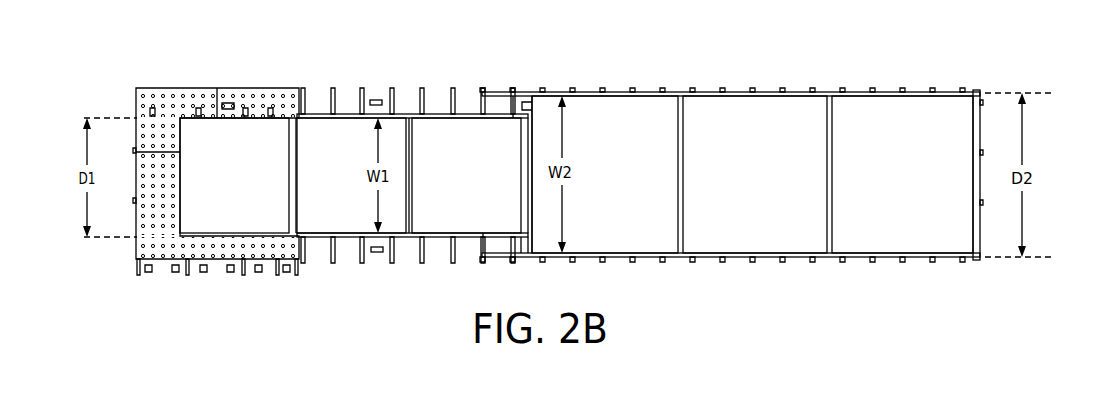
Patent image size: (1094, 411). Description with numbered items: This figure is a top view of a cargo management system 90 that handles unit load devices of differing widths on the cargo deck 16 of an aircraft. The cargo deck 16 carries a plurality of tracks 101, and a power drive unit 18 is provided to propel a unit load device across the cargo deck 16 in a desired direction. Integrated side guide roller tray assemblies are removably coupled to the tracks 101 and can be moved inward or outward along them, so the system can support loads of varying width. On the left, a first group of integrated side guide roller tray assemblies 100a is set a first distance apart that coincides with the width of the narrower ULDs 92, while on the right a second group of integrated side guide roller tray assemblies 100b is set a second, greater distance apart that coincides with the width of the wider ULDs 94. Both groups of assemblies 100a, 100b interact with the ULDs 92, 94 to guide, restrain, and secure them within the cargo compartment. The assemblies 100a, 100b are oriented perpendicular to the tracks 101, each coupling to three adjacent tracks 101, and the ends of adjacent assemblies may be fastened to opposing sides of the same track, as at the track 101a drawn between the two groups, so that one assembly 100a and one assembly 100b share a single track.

The cargo management system 90 is at (152, 45).
The cargo deck 16 is at (259, 73).
The power drive unit 18 is at (228, 108).
The ULD 92 is at (219, 183).
The ULD 94 is at (597, 181).
The first group of integrated side guide roller tray assemblies 100a is at (403, 113).
The second group of integrated side guide roller tray assemblies 100b is at (532, 91).
The tracks 101 is at (337, 89).
The end frame tab 101a is at (489, 89).